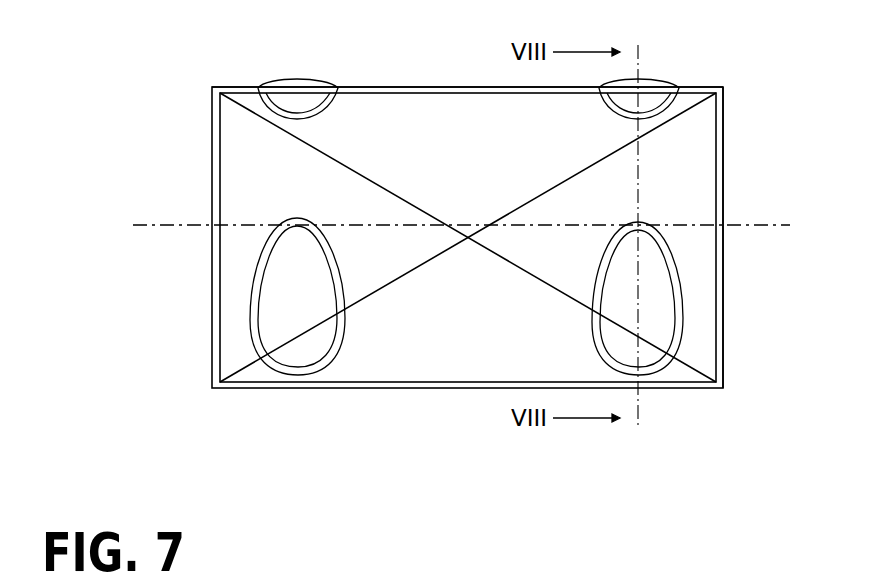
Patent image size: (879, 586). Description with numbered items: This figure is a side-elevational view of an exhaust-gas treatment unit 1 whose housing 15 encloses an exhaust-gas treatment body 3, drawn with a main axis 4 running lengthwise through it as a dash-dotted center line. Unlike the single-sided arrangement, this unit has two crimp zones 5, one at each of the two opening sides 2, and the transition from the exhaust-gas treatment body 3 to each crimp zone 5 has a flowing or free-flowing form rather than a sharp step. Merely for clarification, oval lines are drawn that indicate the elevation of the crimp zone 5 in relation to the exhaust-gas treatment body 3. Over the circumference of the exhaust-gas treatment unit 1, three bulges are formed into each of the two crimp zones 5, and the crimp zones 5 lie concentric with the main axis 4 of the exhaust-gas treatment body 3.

The exhaust-gas treatment unit 1 is at (430, 63).
The opening side 2 is at (212, 319).
The exhaust-gas treatment body 3 is at (476, 358).
The main axis 4 is at (162, 225).
The crimp zone 5 is at (280, 355).
The housing 15 is at (725, 105).